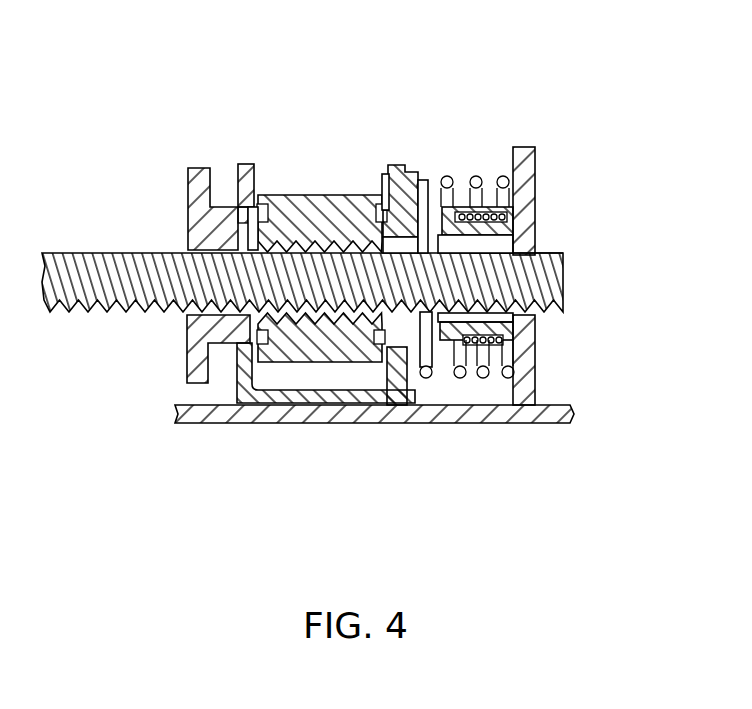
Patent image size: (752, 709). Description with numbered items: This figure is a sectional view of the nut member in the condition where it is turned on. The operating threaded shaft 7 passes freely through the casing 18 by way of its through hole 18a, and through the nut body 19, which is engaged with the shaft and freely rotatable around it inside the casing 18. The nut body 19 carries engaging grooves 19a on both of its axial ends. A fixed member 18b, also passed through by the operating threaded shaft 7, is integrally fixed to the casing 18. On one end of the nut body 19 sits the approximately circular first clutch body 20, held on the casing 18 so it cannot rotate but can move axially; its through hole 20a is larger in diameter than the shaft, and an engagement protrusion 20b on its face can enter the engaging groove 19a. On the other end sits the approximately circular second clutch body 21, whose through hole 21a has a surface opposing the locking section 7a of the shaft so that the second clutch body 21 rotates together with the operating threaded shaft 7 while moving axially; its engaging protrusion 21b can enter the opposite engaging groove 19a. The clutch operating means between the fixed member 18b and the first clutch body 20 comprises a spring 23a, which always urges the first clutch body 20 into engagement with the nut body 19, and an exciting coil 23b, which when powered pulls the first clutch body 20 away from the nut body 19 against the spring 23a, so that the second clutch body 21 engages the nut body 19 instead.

The operating threaded shaft 7 is at (543, 288).
The locking section 7a is at (548, 252).
The casing 18 is at (375, 424).
The through hole 18a is at (272, 422).
The fixed member 18b is at (524, 172).
The nut body 19 is at (340, 196).
The engaging groove 19a is at (266, 210).
The first clutch body 20 is at (410, 178).
The through hole 20a is at (428, 412).
The engagement protrusion 20b is at (380, 172).
The second clutch body 21 is at (204, 166).
The through hole 21a is at (188, 317).
The engaging protrusion 21b is at (258, 208).
The spring 23a is at (478, 176).
The exciting coil 23b is at (497, 326).